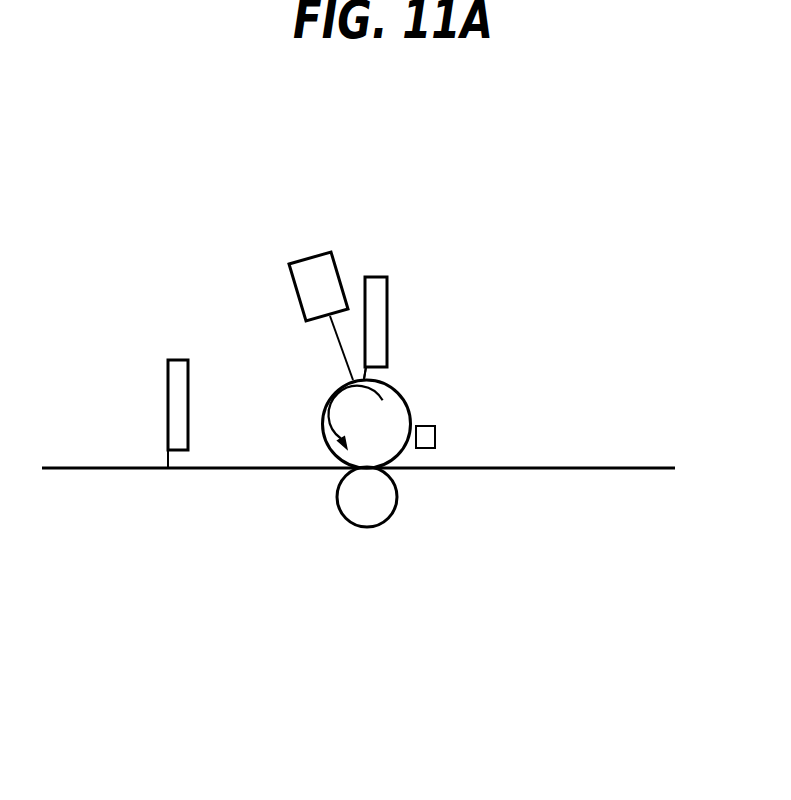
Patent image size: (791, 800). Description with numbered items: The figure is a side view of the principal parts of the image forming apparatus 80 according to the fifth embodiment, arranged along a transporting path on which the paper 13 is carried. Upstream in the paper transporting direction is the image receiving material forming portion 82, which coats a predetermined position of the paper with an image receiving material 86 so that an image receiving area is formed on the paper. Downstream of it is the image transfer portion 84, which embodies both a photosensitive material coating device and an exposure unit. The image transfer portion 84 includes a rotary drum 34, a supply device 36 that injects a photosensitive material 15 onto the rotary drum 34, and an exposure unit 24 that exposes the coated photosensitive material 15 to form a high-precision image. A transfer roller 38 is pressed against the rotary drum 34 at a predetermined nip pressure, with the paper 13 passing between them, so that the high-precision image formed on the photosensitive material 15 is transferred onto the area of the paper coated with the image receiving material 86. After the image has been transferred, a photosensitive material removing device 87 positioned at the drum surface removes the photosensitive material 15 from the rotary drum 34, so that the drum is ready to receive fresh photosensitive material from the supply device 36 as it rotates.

The paper 13 is at (595, 470).
The photosensitive material 15 is at (366, 378).
The exposure unit 24 is at (312, 265).
The rotary drum 34 is at (397, 410).
The supply device 36 is at (377, 278).
The transfer roller 38 is at (385, 498).
The image forming apparatus 80 is at (215, 262).
The image receiving material forming portion 82 is at (178, 380).
The image transfer portion 84 is at (431, 327).
The image receiving material 86 is at (168, 460).
The photosensitive material removing device 87 is at (436, 433).